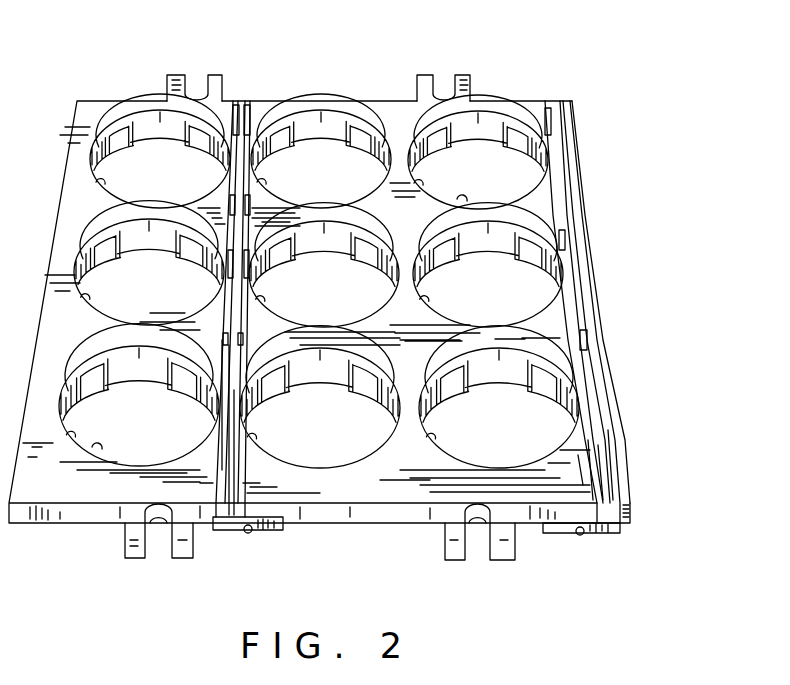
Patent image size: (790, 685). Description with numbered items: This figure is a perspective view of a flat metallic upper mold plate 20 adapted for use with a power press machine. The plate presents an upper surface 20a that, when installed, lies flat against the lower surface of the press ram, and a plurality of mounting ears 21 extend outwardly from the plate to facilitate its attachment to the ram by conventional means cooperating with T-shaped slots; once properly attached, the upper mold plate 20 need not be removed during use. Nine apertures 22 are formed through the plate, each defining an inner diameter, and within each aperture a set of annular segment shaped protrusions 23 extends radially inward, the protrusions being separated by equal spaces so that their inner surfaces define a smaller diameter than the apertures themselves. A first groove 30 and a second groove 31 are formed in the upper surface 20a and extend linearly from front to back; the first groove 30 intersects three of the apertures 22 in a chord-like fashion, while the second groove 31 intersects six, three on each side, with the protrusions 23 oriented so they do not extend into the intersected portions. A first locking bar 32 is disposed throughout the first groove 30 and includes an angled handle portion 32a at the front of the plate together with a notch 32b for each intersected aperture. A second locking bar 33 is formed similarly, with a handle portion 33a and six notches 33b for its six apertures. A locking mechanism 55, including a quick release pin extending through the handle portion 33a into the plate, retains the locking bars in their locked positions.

The upper mold plate 20 is at (623, 115).
The upper surface 20a is at (387, 115).
The mounting ears 21 is at (216, 80).
The apertures 22 is at (458, 203).
The annular segment shaped protrusions 23 is at (522, 186).
The first groove 30 is at (603, 455).
The second groove 31 is at (222, 188).
The first locking bar 32 is at (567, 188).
The angled handle portion 32a is at (607, 534).
The notches 32b is at (541, 112).
The second locking bar 33 is at (250, 192).
The handle portion 33a is at (227, 531).
The notches 33b is at (230, 122).
The locking mechanism 55 is at (257, 542).